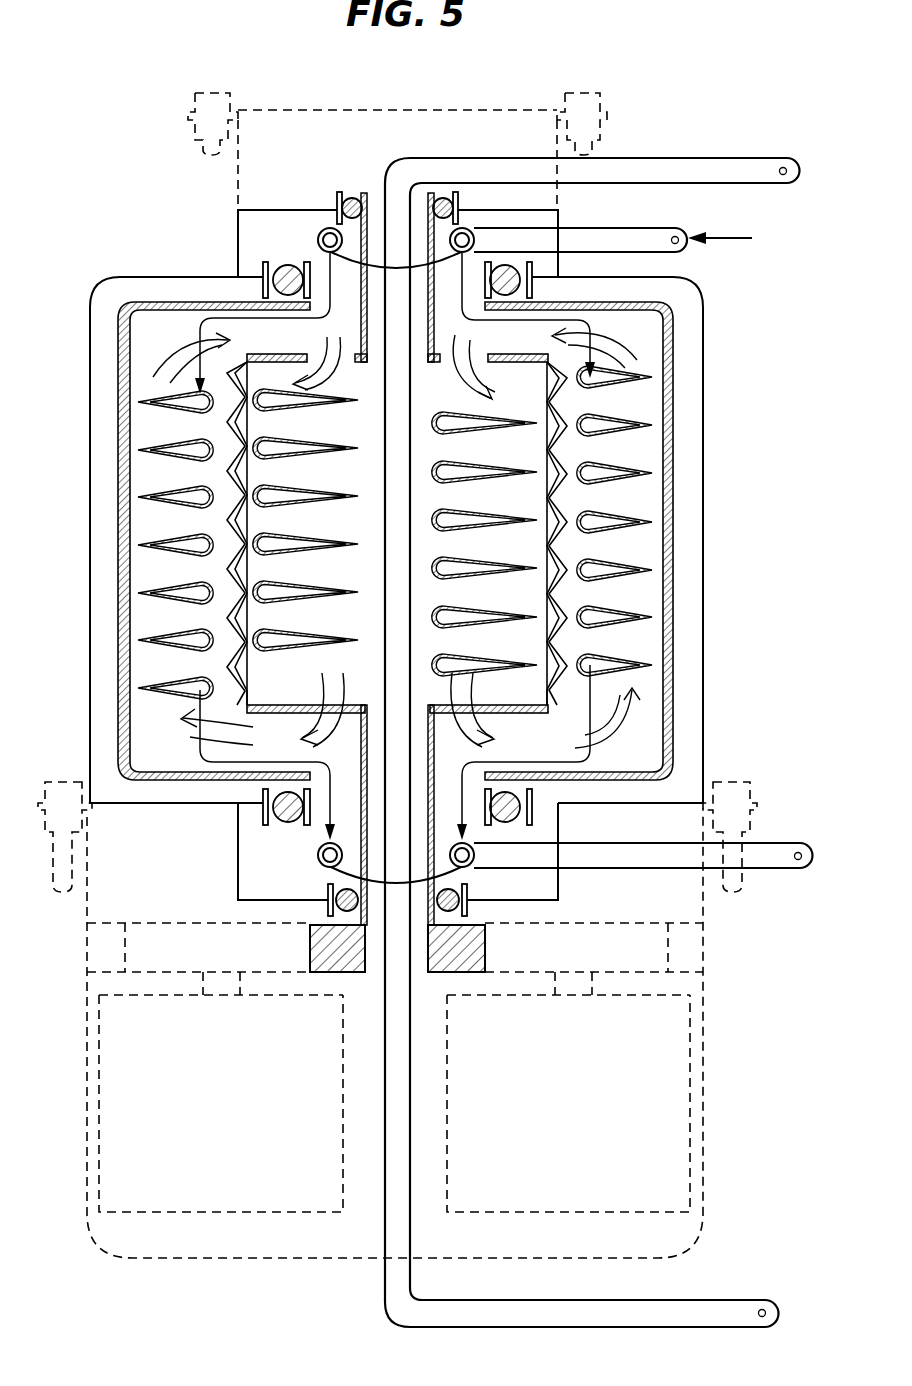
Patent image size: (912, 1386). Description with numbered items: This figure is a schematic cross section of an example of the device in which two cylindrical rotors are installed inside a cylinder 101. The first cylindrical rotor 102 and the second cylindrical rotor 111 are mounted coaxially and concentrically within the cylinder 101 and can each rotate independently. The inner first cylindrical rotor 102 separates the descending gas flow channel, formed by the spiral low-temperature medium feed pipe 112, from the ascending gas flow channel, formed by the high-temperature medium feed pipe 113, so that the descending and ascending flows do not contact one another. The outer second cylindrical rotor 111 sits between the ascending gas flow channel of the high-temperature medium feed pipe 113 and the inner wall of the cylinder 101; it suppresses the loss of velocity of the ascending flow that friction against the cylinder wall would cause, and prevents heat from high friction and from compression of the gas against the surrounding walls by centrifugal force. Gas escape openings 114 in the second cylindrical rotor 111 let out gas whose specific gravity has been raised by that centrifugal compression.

The cylinder 101 is at (690, 310).
The first cylindrical rotor 102 is at (568, 497).
The second cylindrical rotor 111 is at (672, 408).
The low-temperature medium feed pipe 112 is at (340, 402).
The high-temperature medium feed pipe 113 is at (193, 543).
The gas escape openings 114 is at (125, 335).